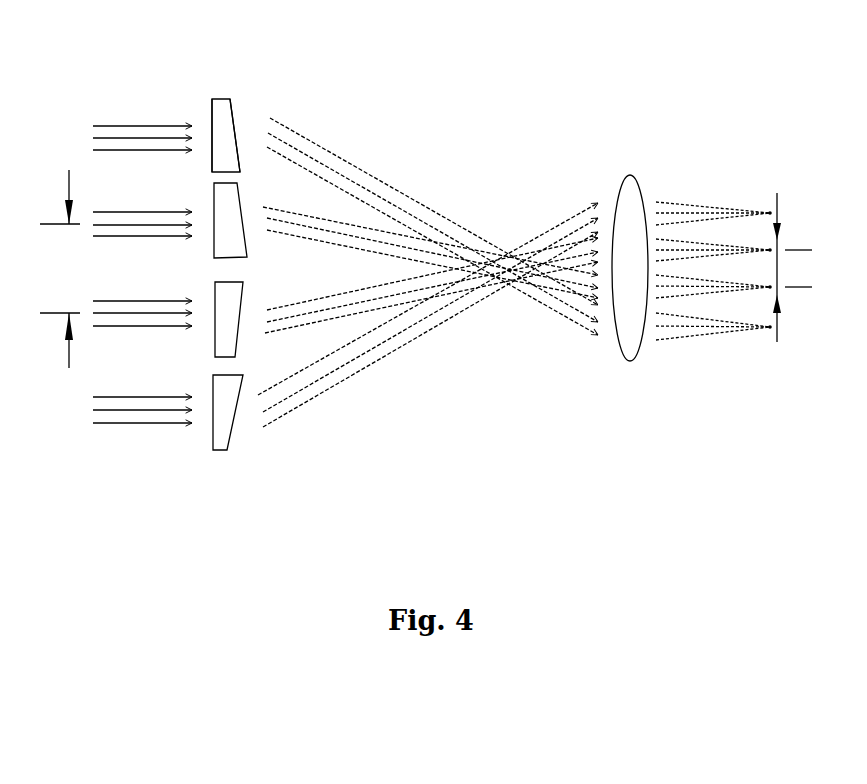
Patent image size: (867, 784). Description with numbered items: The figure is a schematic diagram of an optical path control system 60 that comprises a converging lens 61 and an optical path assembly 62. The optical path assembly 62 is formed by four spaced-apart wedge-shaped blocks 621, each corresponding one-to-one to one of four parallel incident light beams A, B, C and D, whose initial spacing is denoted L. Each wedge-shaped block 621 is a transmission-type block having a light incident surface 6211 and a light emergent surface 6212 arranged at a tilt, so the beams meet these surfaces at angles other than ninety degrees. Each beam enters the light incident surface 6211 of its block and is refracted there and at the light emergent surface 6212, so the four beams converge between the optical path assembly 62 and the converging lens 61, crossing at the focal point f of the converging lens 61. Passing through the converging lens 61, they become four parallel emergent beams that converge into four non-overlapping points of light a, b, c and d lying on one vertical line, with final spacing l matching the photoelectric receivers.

The optical path control system 60 is at (181, 58).
The converging lens 61 is at (635, 183).
The optical path assembly 62 is at (186, 493).
The wedge-shaped block 621 is at (212, 112).
The light incident surface 6211 is at (212, 160).
The light emergent surface 6212 is at (233, 115).